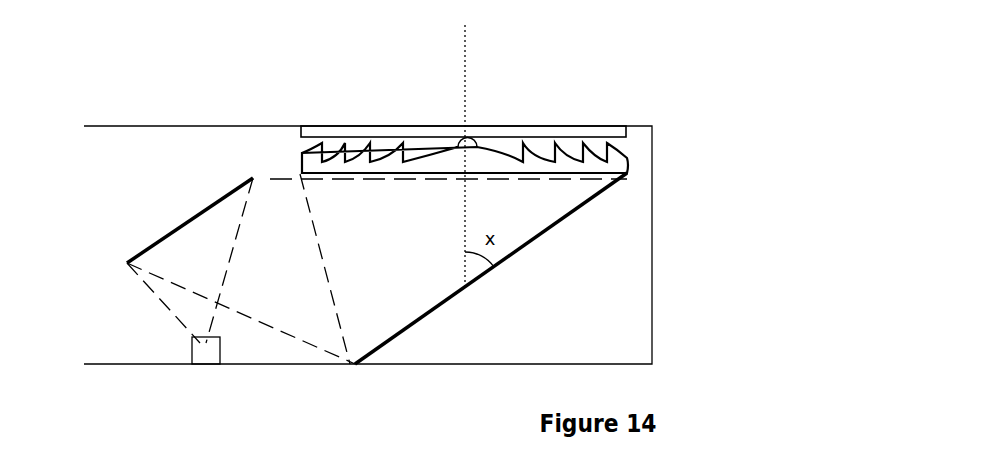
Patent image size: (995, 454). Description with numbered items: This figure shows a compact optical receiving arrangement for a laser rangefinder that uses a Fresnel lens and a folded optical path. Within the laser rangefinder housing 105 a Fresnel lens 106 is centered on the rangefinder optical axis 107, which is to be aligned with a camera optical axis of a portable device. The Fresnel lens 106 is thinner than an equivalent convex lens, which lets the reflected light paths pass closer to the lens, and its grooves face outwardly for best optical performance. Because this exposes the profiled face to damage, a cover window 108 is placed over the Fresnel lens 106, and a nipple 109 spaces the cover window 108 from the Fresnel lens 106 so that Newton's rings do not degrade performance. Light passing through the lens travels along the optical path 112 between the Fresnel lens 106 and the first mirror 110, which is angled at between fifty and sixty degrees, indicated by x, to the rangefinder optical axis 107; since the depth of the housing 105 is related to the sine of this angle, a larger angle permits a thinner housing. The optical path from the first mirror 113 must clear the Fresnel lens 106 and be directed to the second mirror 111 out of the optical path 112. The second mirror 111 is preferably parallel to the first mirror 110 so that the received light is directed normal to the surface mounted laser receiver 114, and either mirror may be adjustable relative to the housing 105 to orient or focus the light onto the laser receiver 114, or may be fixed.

The laser rangefinder housing 105 is at (230, 126).
The Fresnel lens 106 is at (628, 157).
The rangefinder optical axis 107 is at (465, 58).
The cover window 108 is at (597, 126).
The nipple 109 is at (477, 142).
The first mirror 110 is at (541, 235).
The second mirror 111 is at (187, 222).
The optical path 112 is at (330, 275).
The optical path from the first mirror 113 is at (348, 179).
The laser receiver 114 is at (207, 365).